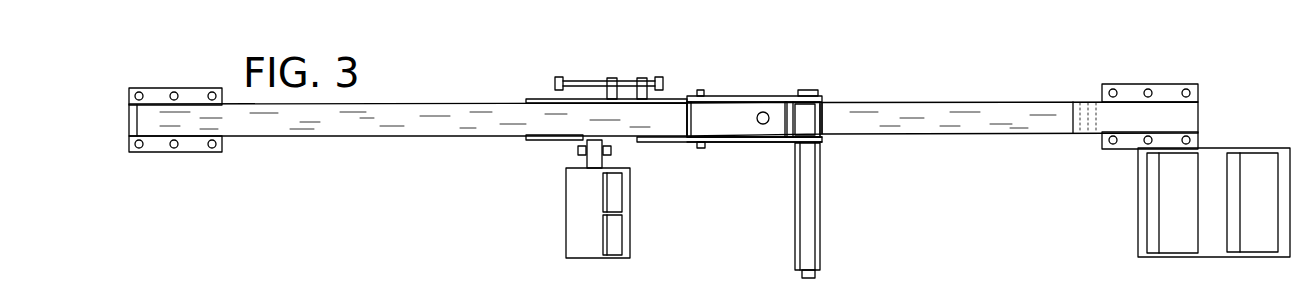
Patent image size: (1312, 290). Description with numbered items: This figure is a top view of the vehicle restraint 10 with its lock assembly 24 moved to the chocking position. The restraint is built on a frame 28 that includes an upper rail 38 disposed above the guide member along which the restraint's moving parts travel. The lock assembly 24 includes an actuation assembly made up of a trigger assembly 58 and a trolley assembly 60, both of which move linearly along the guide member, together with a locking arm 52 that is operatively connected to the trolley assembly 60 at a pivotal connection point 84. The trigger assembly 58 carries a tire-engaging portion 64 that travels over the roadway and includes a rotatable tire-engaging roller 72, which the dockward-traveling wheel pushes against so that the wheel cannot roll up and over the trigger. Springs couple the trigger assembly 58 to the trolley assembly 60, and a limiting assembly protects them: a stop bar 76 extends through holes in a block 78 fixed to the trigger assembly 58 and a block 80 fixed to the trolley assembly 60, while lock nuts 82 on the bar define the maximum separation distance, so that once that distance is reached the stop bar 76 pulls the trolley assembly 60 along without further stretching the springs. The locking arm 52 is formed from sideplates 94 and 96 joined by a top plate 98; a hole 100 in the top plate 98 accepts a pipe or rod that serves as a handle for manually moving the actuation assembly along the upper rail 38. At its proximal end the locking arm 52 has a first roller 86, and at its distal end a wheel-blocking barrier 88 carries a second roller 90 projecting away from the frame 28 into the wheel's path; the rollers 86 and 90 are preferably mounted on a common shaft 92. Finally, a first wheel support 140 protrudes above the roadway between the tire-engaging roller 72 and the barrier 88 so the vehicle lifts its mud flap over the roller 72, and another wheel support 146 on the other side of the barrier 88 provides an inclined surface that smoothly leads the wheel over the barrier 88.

The boom assembly 10 is at (325, 196).
The lock assembly 24 is at (874, 87).
The frame 28 is at (1027, 134).
The upper rail 38 is at (468, 136).
The locking arm 52 is at (768, 143).
The trigger assembly 58 is at (547, 140).
The trolley assembly 60 is at (641, 143).
The tire-engaging portion 64 is at (566, 232).
The tire-engaging roller 72 is at (622, 233).
The stop bar 76 is at (588, 80).
The block 78 is at (612, 78).
The block 80 is at (642, 78).
The lock nuts 82 is at (557, 78).
The connection point 84 is at (699, 148).
The first roller 86 is at (820, 118).
The wheel-blocking barrier 88 is at (820, 198).
The second roller 90 is at (820, 233).
The common shaft 92 is at (803, 279).
The sideplate 94 is at (768, 112).
The sideplate 96 is at (742, 143).
The top plate 98 is at (742, 107).
The hole 100 is at (777, 97).
The first wheel support 140 is at (1167, 212).
The wheel support 146 is at (1251, 162).